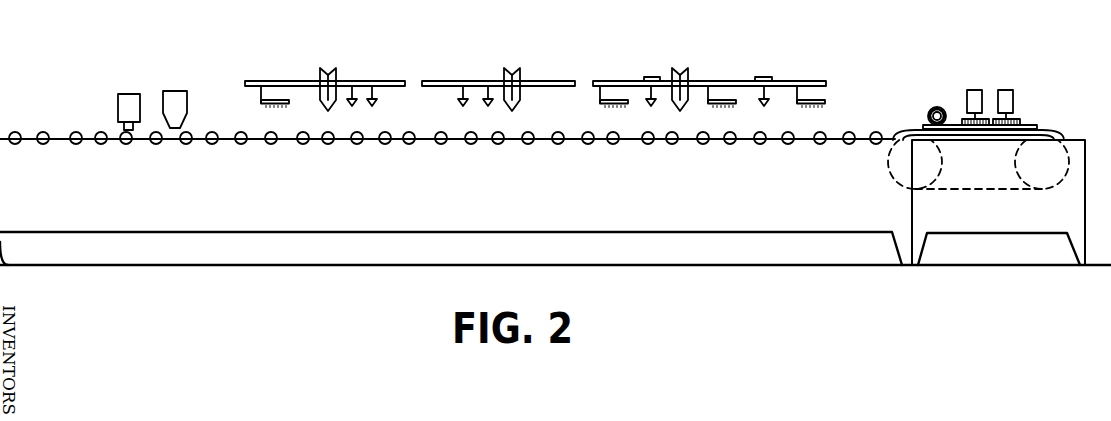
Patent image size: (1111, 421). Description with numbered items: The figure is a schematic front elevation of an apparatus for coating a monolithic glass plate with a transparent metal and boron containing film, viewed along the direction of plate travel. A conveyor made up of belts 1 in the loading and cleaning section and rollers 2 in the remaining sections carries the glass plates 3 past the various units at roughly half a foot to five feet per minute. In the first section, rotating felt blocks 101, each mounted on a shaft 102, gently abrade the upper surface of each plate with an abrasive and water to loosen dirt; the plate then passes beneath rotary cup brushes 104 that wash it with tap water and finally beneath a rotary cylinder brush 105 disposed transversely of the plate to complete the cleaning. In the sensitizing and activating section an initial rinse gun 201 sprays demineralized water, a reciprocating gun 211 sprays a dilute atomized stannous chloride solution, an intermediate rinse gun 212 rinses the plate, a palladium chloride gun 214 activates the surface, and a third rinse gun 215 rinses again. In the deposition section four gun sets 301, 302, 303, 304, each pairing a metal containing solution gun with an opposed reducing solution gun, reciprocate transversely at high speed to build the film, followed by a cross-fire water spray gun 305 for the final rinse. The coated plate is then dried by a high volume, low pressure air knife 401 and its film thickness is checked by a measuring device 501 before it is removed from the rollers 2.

The belts 1 is at (1060, 131).
The rollers 2 is at (47, 136).
The monolithic glass plates 3 is at (950, 125).
The rotating discs or blocks 101 is at (998, 108).
The shaft 102 is at (1020, 119).
The rotary cup brushes 104 is at (975, 89).
The rotary cylinder brush 105 is at (928, 115).
The spray gun 201 is at (826, 104).
The reciprocating gun 211 is at (765, 77).
The intermediate rinse gun 212 is at (712, 104).
The palladium chloride gun 214 is at (655, 77).
The third set rinse gun 215 is at (620, 100).
The gun set 301 is at (487, 104).
The gun set 302 is at (461, 98).
The gun set 303 is at (376, 105).
The gun set 304 is at (350, 95).
The water spray gun 305 is at (259, 98).
The air knife 401 is at (167, 96).
The measuring device 501 is at (117, 100).